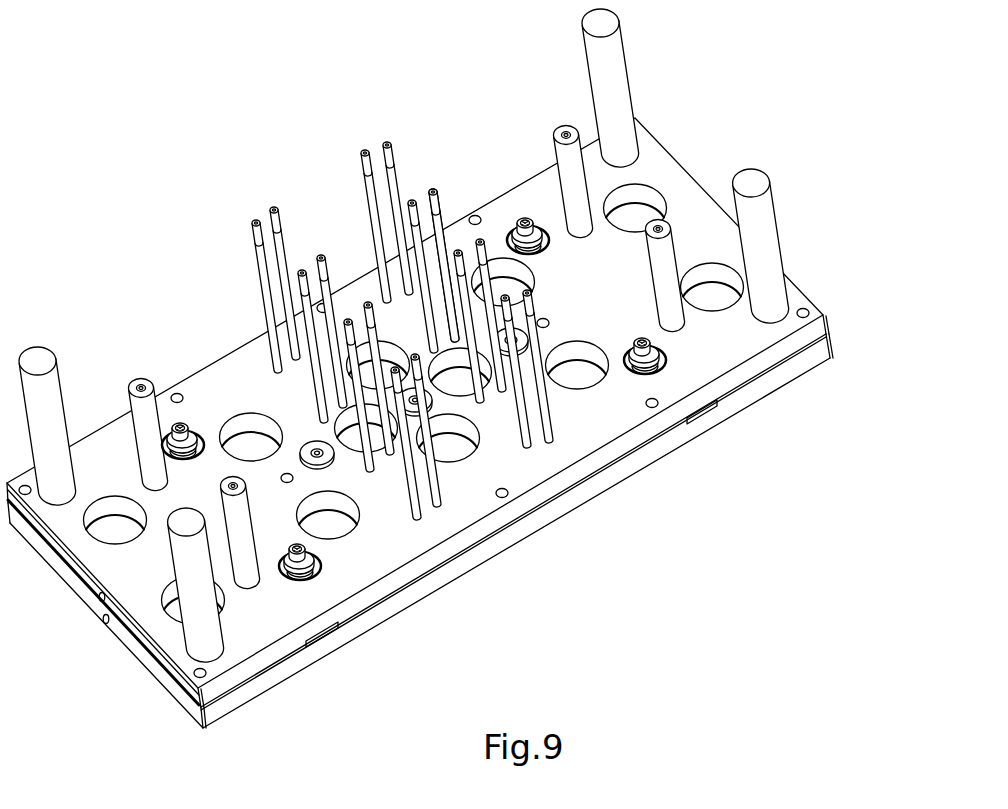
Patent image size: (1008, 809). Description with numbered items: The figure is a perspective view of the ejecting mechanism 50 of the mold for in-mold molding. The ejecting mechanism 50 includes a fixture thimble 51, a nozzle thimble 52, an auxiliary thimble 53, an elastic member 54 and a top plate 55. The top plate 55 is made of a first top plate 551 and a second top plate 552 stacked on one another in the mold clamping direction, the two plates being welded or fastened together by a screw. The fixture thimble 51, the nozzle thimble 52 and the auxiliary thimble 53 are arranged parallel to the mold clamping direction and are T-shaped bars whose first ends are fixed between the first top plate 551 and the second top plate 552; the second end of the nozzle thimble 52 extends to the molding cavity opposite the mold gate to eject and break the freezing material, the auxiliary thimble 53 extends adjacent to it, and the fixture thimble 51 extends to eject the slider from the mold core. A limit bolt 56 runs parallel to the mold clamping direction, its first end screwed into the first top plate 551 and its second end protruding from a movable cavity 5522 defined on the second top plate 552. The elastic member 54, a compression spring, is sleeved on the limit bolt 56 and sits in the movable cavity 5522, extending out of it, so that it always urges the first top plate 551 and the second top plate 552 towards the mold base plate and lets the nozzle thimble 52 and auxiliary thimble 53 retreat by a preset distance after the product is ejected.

The ejecting mechanism 50 is at (151, 55).
The fixture thimble 51 is at (658, 230).
The nozzle thimble 52 is at (322, 258).
The auxiliary thimble 53 is at (302, 273).
The elastic member 54 is at (192, 437).
The top plate 55 is at (468, 423).
The limit bolt 56 is at (180, 427).
The first top plate 551 is at (815, 357).
The second top plate 552 is at (817, 325).
The movable cavity 5522 is at (163, 443).